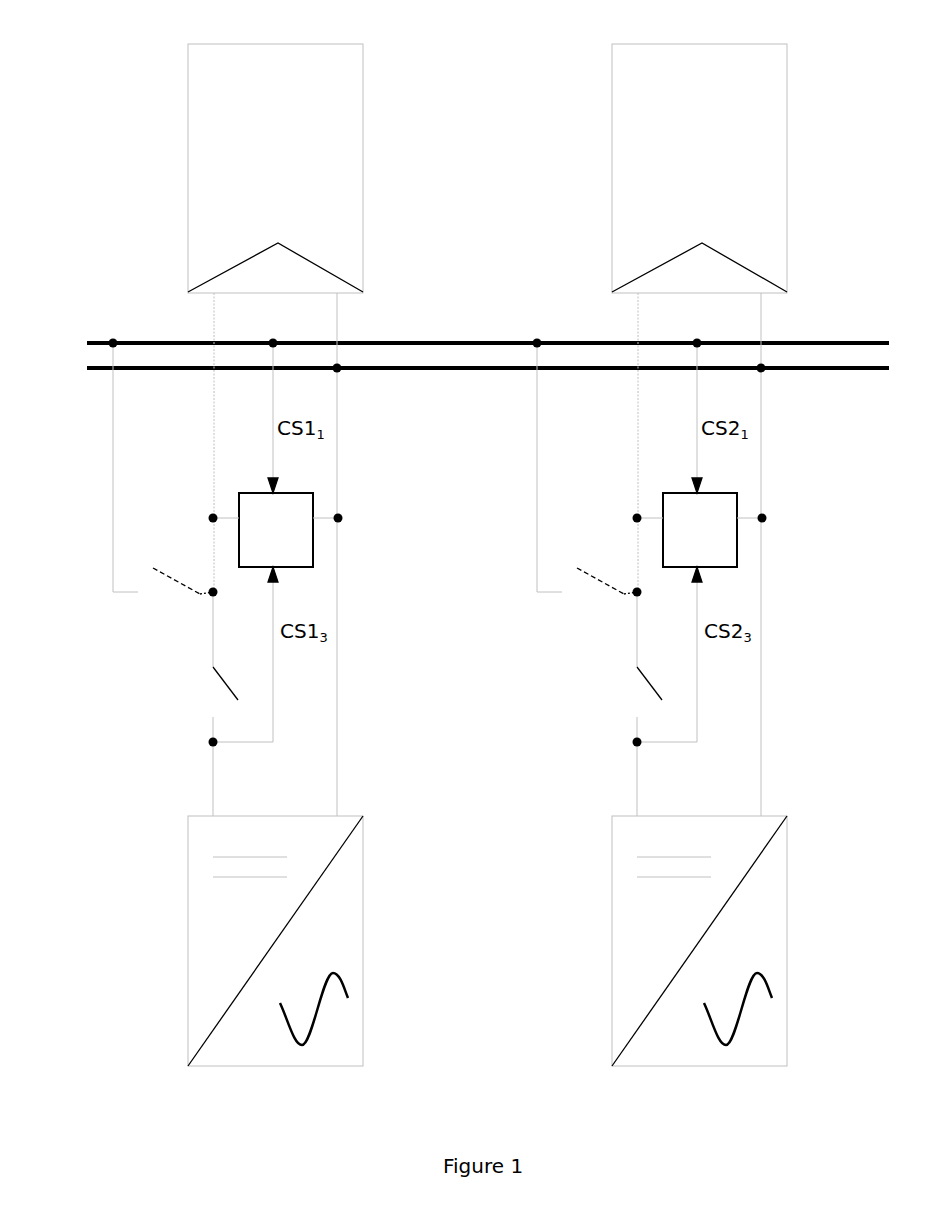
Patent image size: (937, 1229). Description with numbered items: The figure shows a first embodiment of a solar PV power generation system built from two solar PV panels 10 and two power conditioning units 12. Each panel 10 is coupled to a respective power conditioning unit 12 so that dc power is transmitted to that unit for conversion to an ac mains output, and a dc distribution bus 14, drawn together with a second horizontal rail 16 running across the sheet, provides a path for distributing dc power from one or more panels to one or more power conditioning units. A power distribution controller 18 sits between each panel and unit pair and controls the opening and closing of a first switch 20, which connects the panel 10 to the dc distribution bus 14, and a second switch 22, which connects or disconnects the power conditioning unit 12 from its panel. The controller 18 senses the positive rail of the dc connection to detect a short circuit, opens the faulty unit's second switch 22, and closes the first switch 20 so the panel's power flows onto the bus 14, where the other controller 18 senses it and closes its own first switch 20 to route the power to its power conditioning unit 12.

The solar PV panel 10 is at (188, 94).
The power conditioning unit 12 is at (188, 940).
The dc distribution bus 14 is at (391, 369).
The DC bus conductor (positive) 16 is at (159, 340).
The power distribution controller 18 is at (313, 542).
The first switch 20 is at (138, 577).
The second switch 22 is at (148, 688).